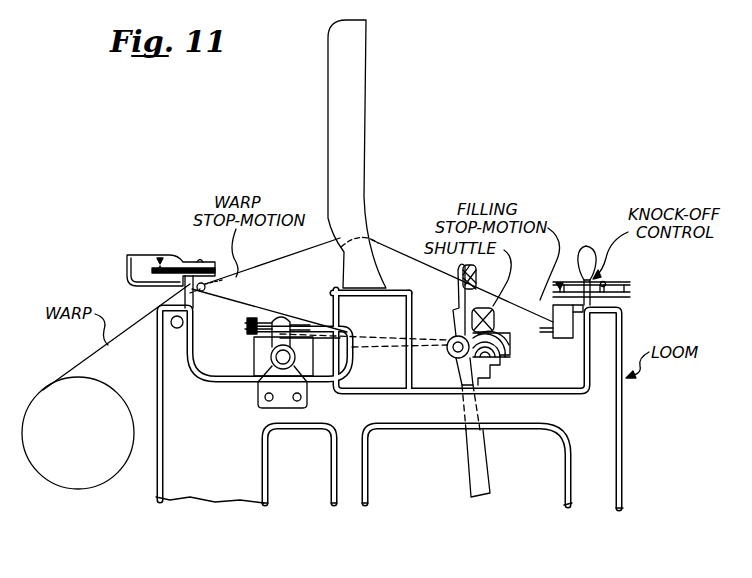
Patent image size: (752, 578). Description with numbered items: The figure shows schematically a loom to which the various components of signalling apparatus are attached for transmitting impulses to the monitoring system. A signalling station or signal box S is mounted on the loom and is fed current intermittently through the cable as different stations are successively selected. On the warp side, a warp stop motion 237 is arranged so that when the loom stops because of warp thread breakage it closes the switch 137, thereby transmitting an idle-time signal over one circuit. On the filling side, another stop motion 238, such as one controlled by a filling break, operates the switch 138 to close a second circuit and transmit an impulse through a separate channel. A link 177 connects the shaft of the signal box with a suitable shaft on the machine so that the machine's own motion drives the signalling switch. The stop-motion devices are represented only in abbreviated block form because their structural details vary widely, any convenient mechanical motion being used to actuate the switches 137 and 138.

The switch 137 is at (150, 263).
The warp stop motion 237 is at (212, 283).
The link 177 is at (271, 358).
The stop motion 238 is at (574, 339).
The switch 138 is at (632, 283).
The signalling station S is at (313, 358).